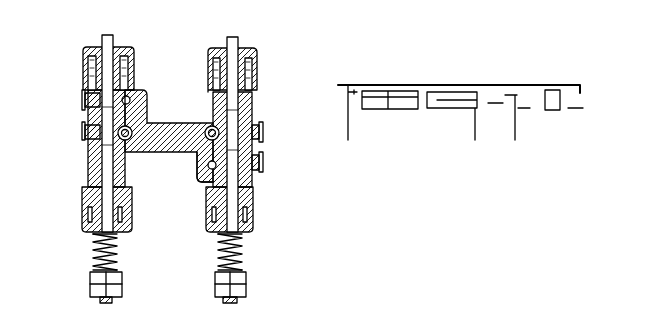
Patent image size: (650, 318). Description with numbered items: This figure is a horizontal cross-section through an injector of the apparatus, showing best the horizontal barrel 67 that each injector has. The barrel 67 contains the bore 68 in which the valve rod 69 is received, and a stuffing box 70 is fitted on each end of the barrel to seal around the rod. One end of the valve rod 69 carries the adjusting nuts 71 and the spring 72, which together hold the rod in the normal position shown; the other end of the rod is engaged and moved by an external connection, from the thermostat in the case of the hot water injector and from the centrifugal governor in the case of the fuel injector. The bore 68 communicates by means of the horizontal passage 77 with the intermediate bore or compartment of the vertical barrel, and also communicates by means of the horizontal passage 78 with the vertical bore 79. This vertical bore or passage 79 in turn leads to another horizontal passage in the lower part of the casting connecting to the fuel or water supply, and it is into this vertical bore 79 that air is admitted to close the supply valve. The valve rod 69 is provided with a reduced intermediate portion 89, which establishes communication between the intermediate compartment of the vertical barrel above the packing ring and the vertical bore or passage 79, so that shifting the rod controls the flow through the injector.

The horizontal barrel 67 is at (251, 115).
The bore 68 is at (253, 182).
The valve rod 69 is at (251, 60).
The stuffing boxes 70 is at (212, 50).
The adjusting nuts 71 is at (240, 282).
The spring 72 is at (243, 249).
The horizontal passage 77 is at (220, 129).
The horizontal passage 78 is at (134, 84).
The vertical bore 79 is at (141, 97).
The reduced intermediate portion 89 is at (262, 146).